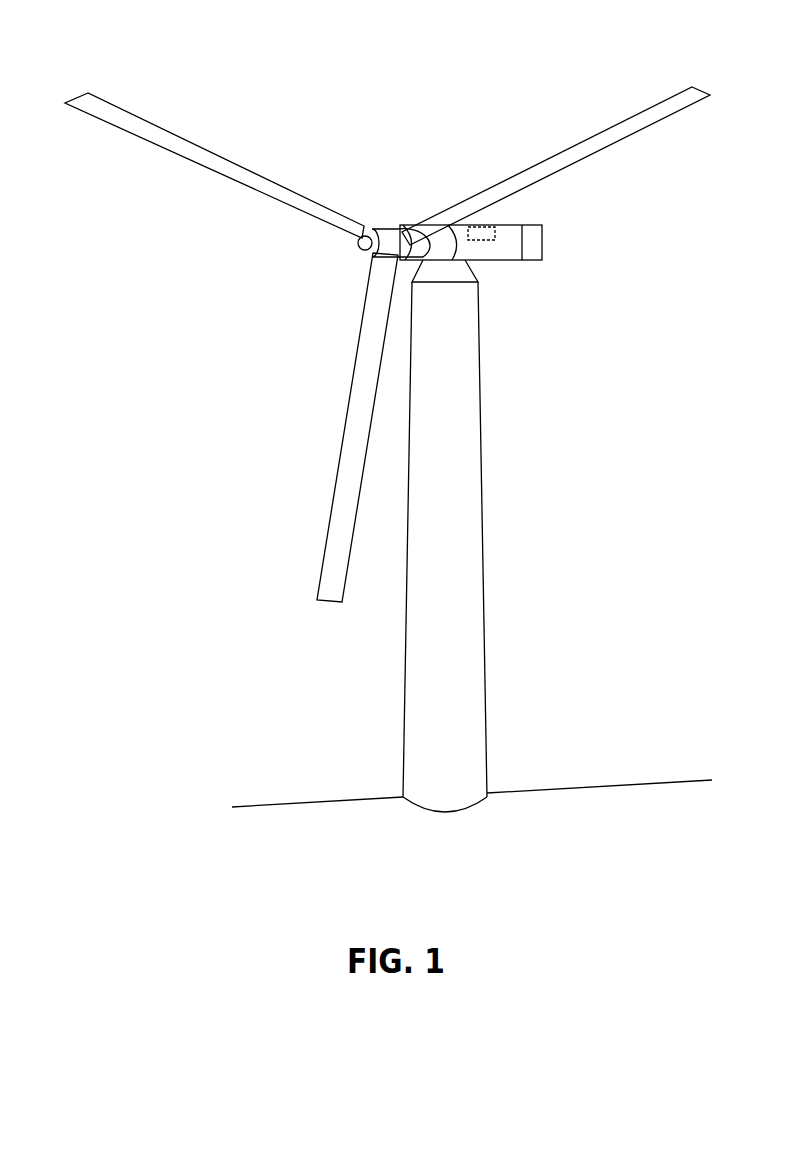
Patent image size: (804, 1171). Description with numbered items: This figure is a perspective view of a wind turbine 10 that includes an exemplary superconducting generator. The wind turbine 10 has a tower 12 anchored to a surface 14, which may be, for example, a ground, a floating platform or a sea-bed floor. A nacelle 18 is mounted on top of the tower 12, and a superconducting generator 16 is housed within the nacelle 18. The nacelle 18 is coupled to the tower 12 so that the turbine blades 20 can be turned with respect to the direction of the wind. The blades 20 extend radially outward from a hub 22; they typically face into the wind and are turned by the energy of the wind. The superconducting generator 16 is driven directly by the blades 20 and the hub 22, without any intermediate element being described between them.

The wind turbine 10 is at (150, 48).
The tower 12 is at (447, 563).
The surface 14 is at (613, 787).
The superconducting generator 16 is at (503, 247).
The nacelle 18 is at (495, 262).
The turbine blades 20 is at (562, 168).
The hub 22 is at (371, 230).